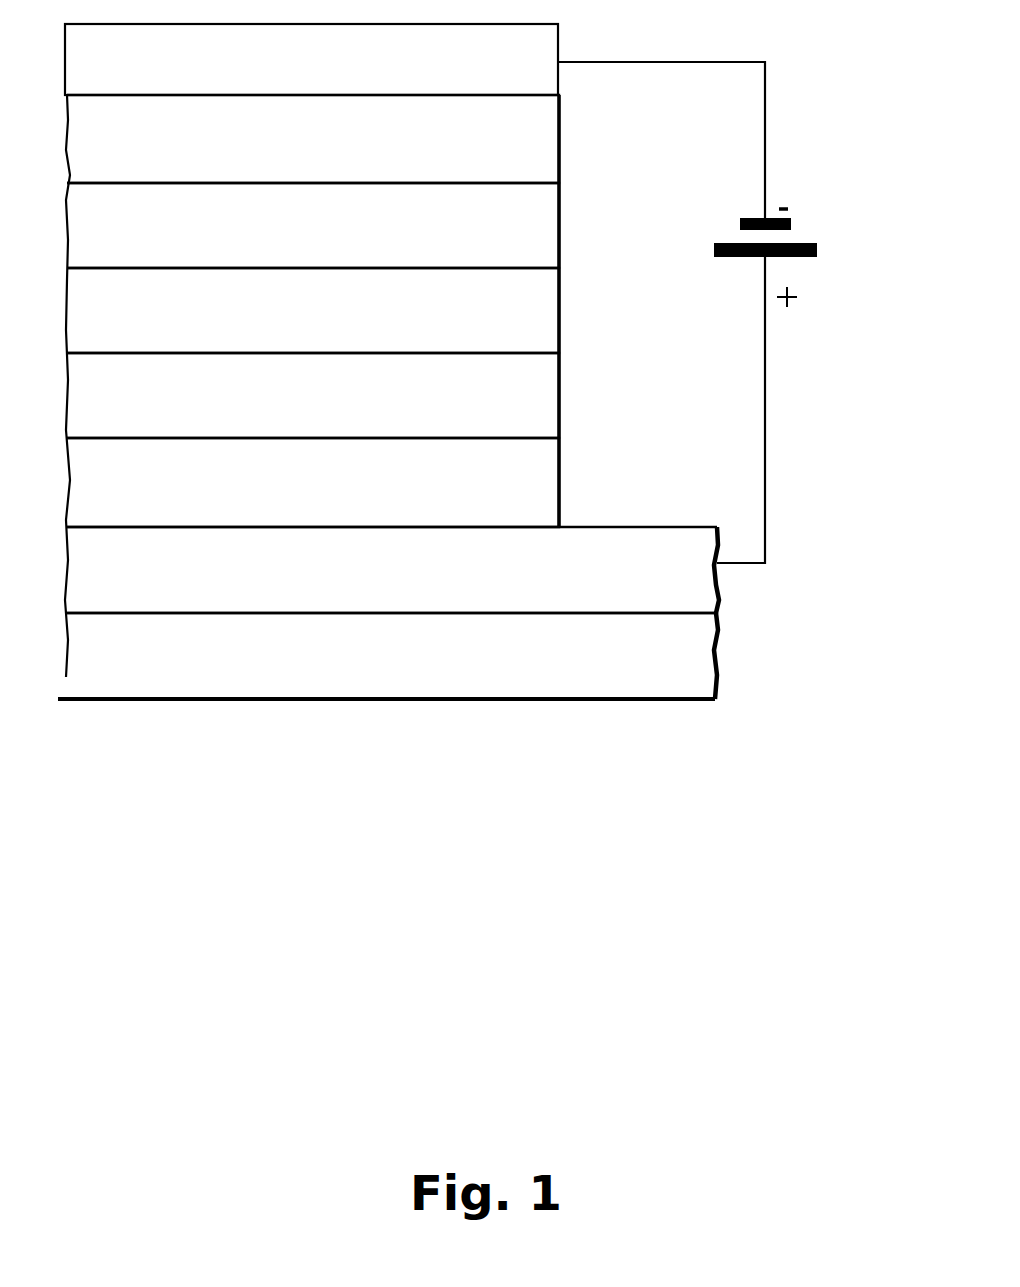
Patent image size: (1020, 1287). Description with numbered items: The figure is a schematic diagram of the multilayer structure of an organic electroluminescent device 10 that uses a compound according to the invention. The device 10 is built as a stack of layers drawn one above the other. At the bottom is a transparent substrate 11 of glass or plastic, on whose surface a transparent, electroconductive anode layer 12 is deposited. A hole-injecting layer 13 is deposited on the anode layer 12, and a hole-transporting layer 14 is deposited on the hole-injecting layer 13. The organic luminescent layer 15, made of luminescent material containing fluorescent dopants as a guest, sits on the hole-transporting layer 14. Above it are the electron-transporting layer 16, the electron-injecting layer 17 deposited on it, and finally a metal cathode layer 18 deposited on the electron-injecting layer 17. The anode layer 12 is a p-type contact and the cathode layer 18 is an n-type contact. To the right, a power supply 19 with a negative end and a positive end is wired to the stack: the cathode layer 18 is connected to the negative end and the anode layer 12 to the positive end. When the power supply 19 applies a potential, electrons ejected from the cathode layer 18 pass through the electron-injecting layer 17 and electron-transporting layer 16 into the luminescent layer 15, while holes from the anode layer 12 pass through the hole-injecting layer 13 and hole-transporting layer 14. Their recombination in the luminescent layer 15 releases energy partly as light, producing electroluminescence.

The organic electroluminescent device 10 is at (323, 750).
The transparent substrate 11 is at (316, 661).
The anode layer 12 is at (325, 591).
The hole-injecting layer 13 is at (325, 490).
The hole-transporting layer 14 is at (328, 405).
The luminescent layer 15 is at (328, 320).
The electron-transporting layer 16 is at (328, 235).
The electron-injecting layer 17 is at (330, 148).
The cathode layer 18 is at (303, 58).
The power supply 19 is at (846, 241).